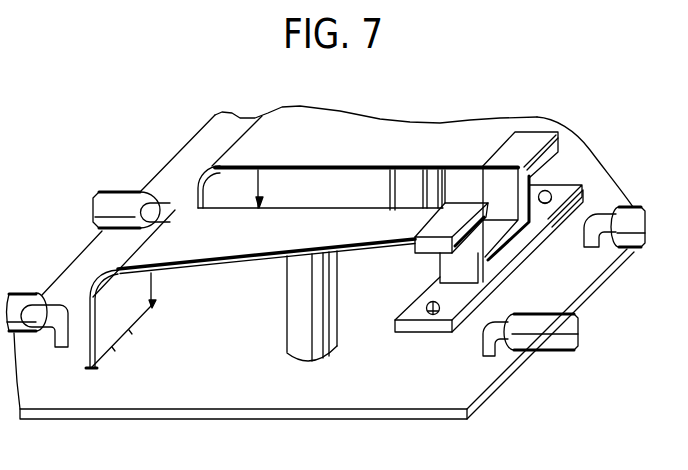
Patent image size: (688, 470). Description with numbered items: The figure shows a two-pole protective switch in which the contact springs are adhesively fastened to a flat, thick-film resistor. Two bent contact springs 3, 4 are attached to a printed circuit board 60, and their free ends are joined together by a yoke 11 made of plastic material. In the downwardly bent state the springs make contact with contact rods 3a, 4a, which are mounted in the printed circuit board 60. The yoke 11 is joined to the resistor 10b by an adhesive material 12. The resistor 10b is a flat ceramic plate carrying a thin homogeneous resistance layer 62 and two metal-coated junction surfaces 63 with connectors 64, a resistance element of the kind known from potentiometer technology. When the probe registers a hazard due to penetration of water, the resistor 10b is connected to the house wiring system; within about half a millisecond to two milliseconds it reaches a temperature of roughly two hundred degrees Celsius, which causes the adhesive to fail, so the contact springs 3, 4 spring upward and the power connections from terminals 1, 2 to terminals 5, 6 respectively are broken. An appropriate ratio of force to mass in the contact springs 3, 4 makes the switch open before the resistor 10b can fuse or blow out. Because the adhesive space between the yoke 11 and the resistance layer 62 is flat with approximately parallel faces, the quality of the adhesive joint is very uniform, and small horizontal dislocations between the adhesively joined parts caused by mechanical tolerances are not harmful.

The terminal 1 is at (117, 205).
The terminal 2 is at (23, 295).
The contact spring 3 is at (263, 141).
The contact rod 3a is at (413, 187).
The contact spring 4 is at (189, 222).
The contact rod 4a is at (302, 337).
The terminal 5 is at (566, 352).
The terminal 6 is at (632, 250).
The resistor 10b is at (596, 163).
The yoke 11 is at (535, 140).
The adhesive material 12 is at (497, 266).
The printed circuit board 60 is at (218, 402).
The resistance layer 62 is at (584, 183).
The junction surfaces 63 is at (456, 331).
The connectors 64 is at (433, 316).